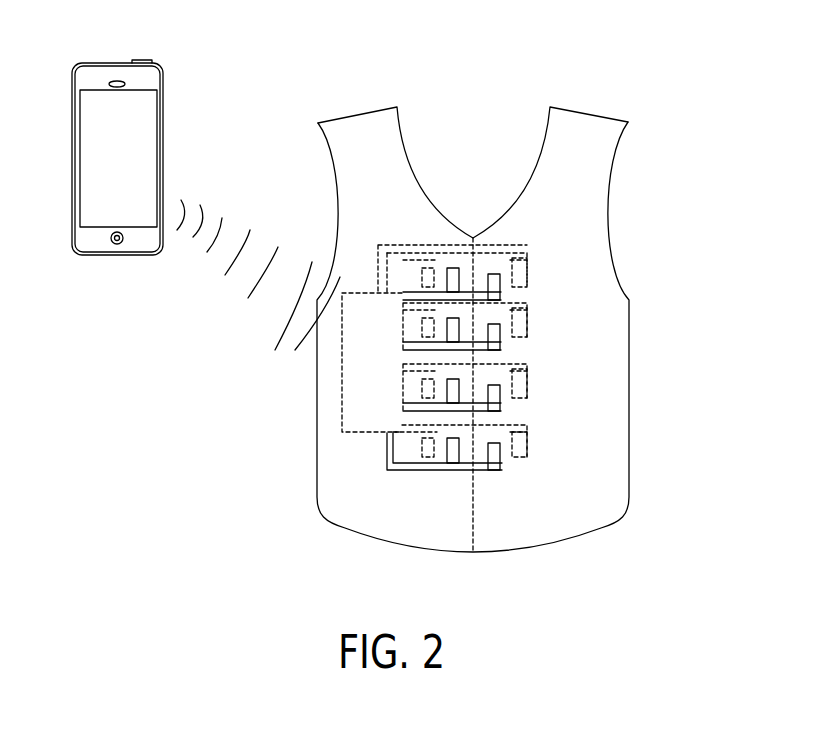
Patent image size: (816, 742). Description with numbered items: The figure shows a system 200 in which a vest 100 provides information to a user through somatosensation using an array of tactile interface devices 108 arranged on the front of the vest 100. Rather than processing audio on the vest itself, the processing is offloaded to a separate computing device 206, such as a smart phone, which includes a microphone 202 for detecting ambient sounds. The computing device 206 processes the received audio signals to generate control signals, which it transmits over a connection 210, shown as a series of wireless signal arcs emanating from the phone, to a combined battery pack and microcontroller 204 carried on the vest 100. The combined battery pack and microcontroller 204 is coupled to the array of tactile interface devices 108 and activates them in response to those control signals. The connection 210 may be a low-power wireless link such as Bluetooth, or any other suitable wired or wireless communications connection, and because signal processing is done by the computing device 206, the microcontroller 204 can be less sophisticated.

The vest 100 is at (612, 198).
The tactile interface devices 108 is at (428, 457).
The system 200 is at (677, 86).
The microphone 202 is at (120, 80).
The combined battery pack and microcontroller 204 is at (342, 394).
The computing device 206 is at (165, 105).
The connection 210 is at (218, 226).